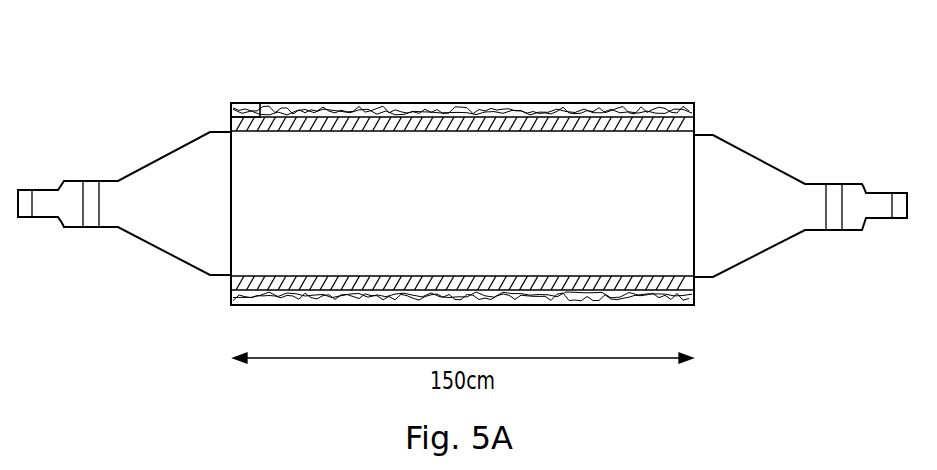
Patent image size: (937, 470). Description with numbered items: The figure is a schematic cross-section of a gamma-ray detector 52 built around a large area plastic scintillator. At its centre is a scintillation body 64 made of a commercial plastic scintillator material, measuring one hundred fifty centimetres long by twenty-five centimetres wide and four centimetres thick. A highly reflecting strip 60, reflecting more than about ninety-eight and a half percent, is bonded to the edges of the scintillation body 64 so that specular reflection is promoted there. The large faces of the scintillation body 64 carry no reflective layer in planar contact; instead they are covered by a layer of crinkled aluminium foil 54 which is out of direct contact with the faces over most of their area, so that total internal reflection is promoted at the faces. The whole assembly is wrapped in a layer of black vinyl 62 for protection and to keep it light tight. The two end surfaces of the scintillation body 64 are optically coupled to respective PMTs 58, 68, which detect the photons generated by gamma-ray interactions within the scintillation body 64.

The gamma-ray detector 52 is at (645, 81).
The crinkled aluminium foil 54 is at (336, 105).
The PMT 58 is at (160, 252).
The reflecting strip 60 is at (431, 105).
The black vinyl 62 is at (255, 104).
The scintillation body 64 is at (678, 165).
The PMT 68 is at (768, 250).